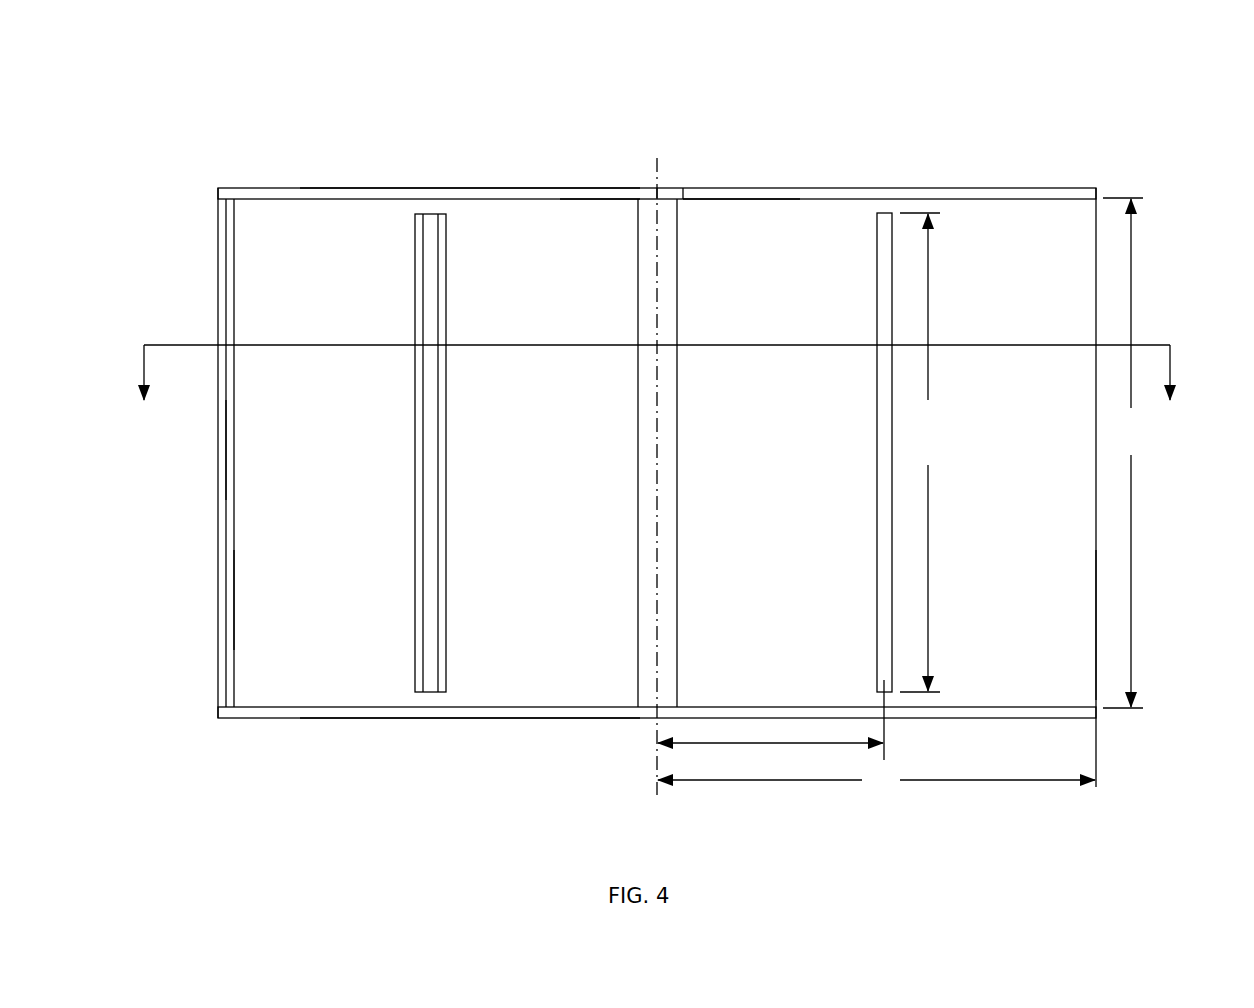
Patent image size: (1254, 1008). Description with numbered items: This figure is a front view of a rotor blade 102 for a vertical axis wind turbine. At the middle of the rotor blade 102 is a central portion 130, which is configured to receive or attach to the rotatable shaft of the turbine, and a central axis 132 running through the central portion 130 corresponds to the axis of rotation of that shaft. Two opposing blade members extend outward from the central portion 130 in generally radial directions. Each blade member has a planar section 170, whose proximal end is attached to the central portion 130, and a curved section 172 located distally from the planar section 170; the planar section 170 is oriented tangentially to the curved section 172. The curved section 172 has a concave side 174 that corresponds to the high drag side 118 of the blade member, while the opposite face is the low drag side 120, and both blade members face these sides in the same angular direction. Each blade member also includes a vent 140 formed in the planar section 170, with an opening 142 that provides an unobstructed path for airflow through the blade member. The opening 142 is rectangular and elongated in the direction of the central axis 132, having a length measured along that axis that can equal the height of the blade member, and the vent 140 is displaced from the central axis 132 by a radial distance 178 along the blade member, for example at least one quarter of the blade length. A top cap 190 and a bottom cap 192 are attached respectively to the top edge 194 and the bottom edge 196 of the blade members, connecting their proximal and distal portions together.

The rotor blade 102 is at (1073, 130).
The high drag side 118 is at (260, 590).
The low drag side 120 is at (1073, 605).
The central portion 130 is at (675, 412).
The central axis 132 is at (657, 172).
The vent 140 is at (460, 292).
The opening 142 is at (427, 487).
The planar section 170 is at (582, 217).
The curved section 172 is at (253, 250).
The concave side 174 is at (258, 448).
The radial distance 178 is at (790, 743).
The top cap 190 is at (283, 190).
The bottom cap 192 is at (310, 718).
The top edge 194 is at (486, 194).
The bottom edge 196 is at (507, 708).